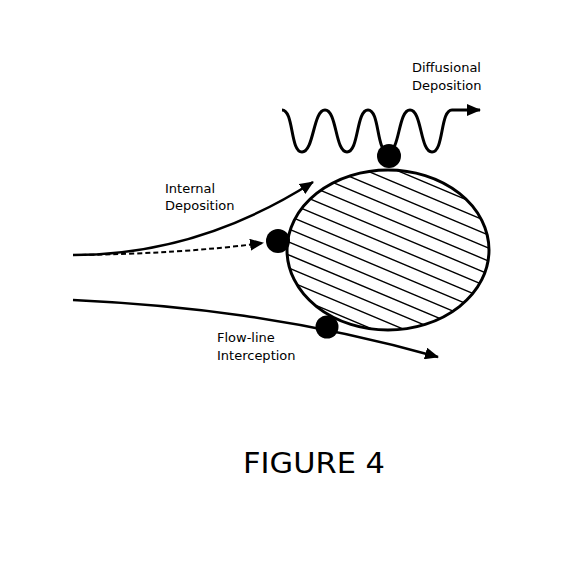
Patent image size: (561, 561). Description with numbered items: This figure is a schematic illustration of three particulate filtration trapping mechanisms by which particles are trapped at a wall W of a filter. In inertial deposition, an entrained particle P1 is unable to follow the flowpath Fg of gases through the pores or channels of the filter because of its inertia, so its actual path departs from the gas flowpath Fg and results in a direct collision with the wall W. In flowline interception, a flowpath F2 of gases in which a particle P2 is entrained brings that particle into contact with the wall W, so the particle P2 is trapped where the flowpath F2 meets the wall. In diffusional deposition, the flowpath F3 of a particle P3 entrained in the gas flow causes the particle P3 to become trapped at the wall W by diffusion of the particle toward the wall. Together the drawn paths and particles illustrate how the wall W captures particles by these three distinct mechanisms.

The particle P1 is at (95, 377).
The particle P2 is at (330, 336).
The particle P3 is at (388, 148).
The flowpath of a particle F3 is at (323, 110).
The flowpath of gases Fg is at (195, 240).
The flowpath of gases F2 is at (203, 312).
The wall W is at (452, 283).